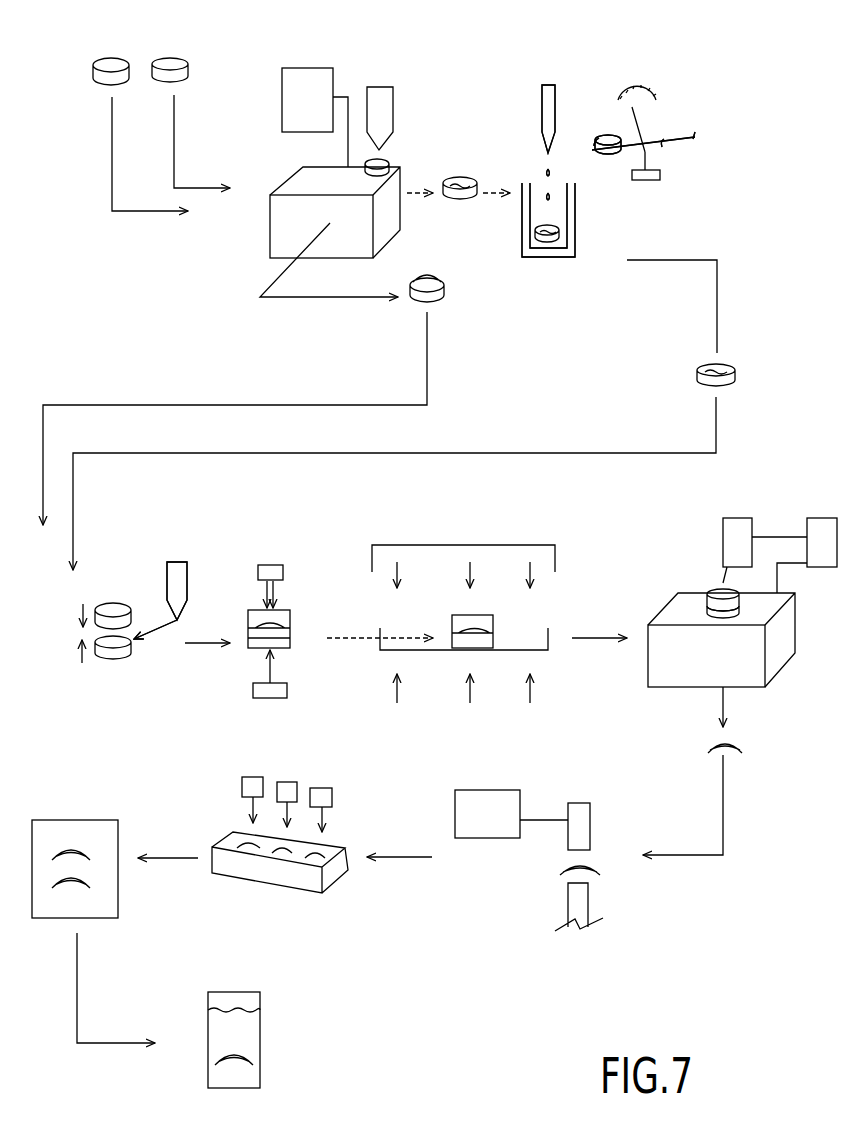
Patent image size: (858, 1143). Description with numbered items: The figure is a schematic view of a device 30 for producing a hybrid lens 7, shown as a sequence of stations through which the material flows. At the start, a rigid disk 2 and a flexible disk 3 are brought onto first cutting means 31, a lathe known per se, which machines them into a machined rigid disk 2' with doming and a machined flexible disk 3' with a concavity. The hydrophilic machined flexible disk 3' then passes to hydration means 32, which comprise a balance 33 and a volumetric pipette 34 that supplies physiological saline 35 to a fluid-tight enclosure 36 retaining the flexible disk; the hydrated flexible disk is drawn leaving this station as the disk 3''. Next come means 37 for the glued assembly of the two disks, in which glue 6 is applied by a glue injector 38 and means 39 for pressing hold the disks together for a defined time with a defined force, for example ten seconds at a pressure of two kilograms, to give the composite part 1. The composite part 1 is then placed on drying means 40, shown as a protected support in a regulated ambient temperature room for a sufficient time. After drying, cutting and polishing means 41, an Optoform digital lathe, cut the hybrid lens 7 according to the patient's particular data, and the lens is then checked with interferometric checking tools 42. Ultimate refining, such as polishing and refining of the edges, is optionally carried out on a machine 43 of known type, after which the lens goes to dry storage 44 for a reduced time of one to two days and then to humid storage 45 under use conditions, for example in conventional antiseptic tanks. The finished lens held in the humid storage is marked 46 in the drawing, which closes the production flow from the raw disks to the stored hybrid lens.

The composite part 1 is at (245, 605).
The rigid disk 2 is at (97, 48).
The flexible disk 3 is at (180, 46).
The machined rigid disk 2' is at (458, 497).
The machined flexible disk 3' is at (520, 182).
The granulated second portion 3'' is at (463, 484).
The glue 6 is at (157, 628).
The hybrid lens 7 is at (701, 736).
The device 30 is at (709, 82).
The first cutting means 31 is at (404, 88).
The hydration means 32 is at (568, 96).
The balance 33 is at (709, 140).
The volumetric pipette 34 is at (542, 107).
The physiological saline 35 is at (545, 175).
The fluid-tight enclosure 36 is at (578, 243).
The means for glued assembly 37 is at (183, 548).
The glue injector 38 is at (167, 583).
The means for pressing 39 is at (270, 567).
The drying means 40 is at (427, 650).
The cutting and polishing means 41 is at (842, 508).
The interferometric checking tools 42 is at (601, 826).
The refining machine 43 is at (343, 882).
The dry storage 44 is at (106, 925).
The humid storage 45 is at (279, 1006).
The finished lens blank 46 is at (260, 1060).